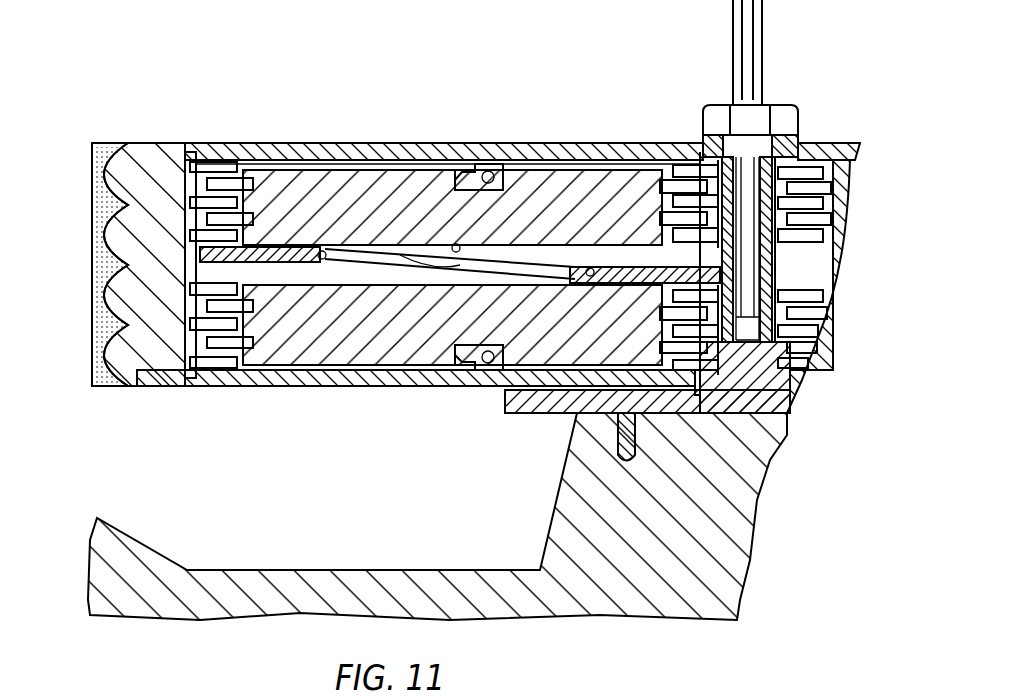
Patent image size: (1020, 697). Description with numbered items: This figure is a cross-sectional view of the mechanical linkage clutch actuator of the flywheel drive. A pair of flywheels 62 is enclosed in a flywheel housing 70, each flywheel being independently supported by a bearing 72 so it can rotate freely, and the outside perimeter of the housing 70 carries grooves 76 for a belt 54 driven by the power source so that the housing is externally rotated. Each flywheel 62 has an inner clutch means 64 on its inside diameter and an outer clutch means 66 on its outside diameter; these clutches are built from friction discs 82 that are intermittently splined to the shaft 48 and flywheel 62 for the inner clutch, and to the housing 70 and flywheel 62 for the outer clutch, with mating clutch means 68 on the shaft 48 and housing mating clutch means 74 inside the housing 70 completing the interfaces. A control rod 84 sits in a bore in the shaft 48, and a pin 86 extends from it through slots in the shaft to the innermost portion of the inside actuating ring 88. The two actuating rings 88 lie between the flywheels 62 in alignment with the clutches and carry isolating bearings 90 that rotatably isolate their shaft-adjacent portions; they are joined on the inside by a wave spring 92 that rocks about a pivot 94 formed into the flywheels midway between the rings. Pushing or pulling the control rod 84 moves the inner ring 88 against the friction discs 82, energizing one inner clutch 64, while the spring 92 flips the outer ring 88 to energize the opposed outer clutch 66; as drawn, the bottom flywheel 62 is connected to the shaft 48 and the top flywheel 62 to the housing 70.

The shaft 48 is at (775, 105).
The belt 54 is at (98, 143).
The flywheel 62 is at (328, 170).
The inner clutch means 64 is at (655, 170).
The outer clutch means 66 is at (213, 162).
The mating clutch means 68 is at (717, 143).
The flywheel housing 70 is at (398, 143).
The bearing 72 is at (486, 168).
The housing mating clutch means 74 is at (160, 143).
The grooves 76 is at (110, 387).
The friction discs 82 is at (218, 387).
The control rod 84 is at (762, 10).
The pin 86 is at (812, 338).
The actuating rings 88 is at (320, 247).
The isolating bearings 90 is at (590, 268).
The wave spring 92 is at (403, 386).
The pivot 94 is at (454, 245).